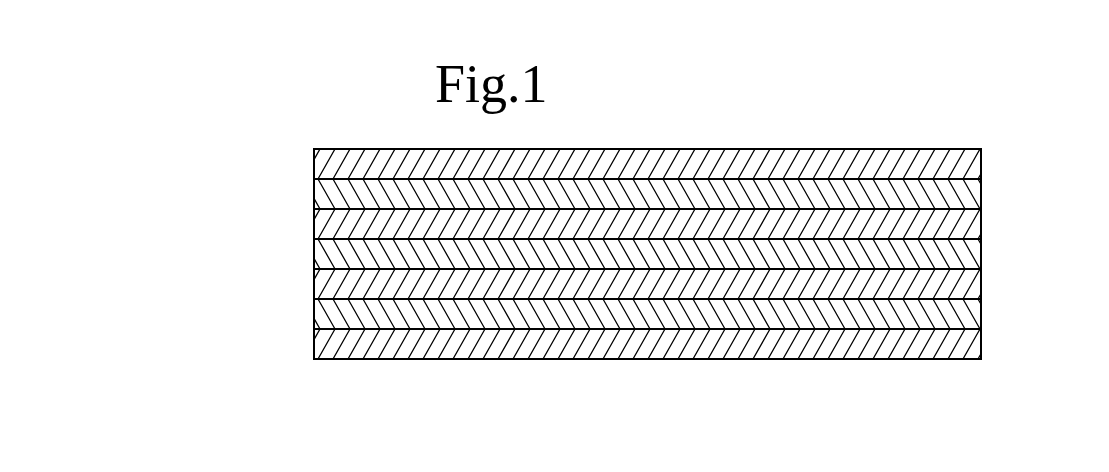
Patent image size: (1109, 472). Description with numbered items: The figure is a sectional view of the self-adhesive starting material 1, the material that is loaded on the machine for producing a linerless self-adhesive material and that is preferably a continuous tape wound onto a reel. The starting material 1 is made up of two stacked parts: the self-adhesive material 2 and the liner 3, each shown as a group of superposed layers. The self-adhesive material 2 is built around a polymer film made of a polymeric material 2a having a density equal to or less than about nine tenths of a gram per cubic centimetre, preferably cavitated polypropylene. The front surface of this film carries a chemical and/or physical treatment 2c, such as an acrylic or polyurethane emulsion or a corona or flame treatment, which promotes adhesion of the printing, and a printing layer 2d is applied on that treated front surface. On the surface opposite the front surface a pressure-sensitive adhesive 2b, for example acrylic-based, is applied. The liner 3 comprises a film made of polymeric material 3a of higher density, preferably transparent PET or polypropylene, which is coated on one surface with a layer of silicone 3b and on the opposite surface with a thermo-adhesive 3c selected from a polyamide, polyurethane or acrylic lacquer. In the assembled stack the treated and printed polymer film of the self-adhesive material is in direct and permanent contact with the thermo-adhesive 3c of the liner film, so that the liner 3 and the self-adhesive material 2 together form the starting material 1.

The self-adhesive starting material 1 is at (307, 358).
The self-adhesive material 2 is at (988, 269).
The liner 3 is at (988, 359).
The polymer film made of a polymeric material 2a is at (649, 139).
The pressure-sensitive adhesive 2b is at (649, 160).
The chemical and/or physical treatment 2c is at (649, 124).
The printing layer 2d is at (649, 113).
The film made of polymeric material 3a is at (649, 380).
The layer of silicone 3b is at (649, 355).
The thermo-adhesive 3c is at (649, 386).